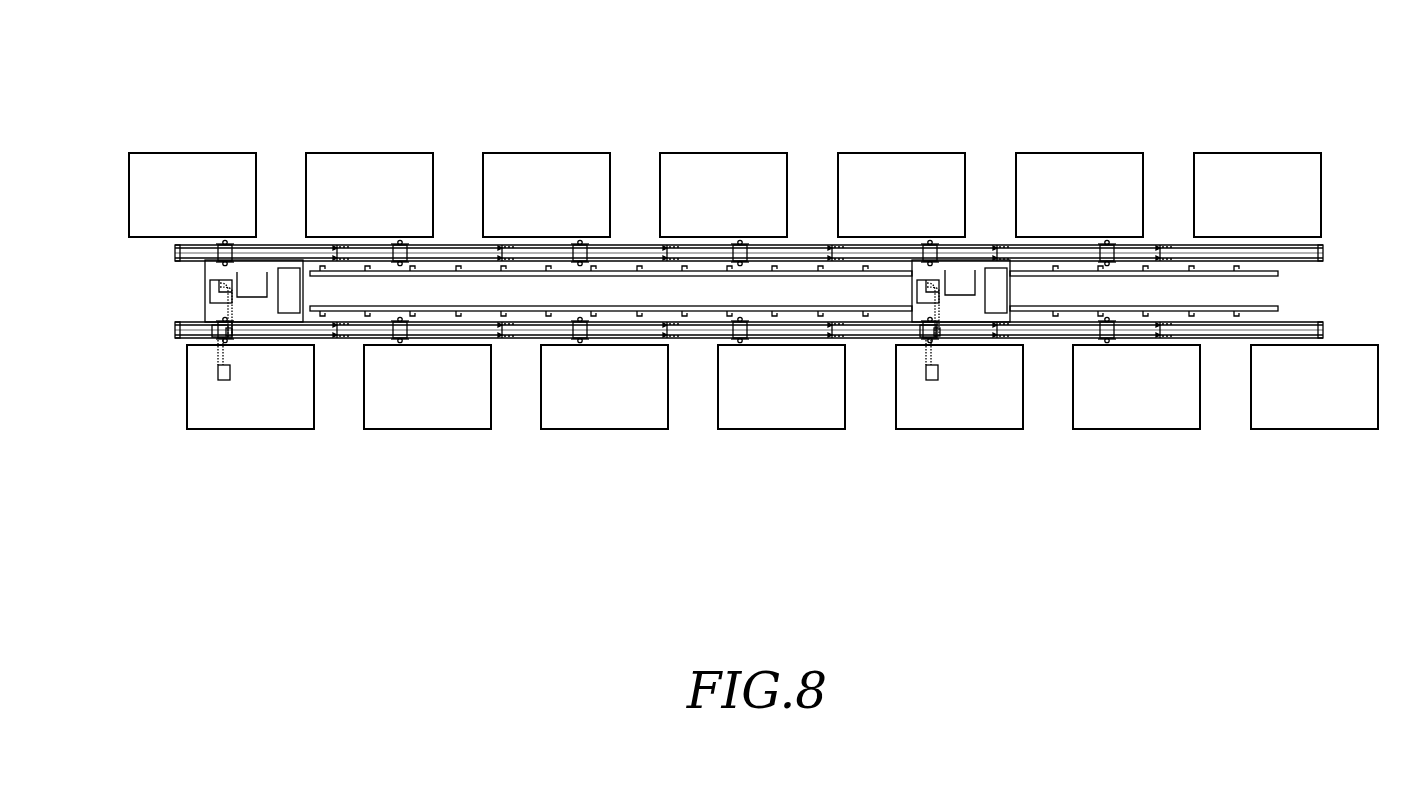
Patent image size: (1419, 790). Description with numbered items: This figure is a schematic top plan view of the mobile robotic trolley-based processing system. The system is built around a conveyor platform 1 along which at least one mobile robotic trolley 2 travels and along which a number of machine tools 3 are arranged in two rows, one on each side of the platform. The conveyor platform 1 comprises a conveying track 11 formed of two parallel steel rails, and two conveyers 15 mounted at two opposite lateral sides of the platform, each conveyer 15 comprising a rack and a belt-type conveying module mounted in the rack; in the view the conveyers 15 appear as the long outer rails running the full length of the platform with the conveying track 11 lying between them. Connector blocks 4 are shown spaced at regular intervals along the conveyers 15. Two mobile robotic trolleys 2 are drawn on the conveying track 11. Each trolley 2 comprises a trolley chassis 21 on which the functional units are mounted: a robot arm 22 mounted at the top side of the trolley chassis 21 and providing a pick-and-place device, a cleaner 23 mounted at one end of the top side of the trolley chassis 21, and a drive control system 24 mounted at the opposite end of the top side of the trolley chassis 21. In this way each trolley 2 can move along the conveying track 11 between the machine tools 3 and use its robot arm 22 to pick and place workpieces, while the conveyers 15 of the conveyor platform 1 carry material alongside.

The conveyor platform 1 is at (703, 295).
The mobile robotic trolley 2 is at (208, 370).
The machine tool 3 is at (379, 137).
The rail connector block 4 is at (225, 247).
The conveying track 11 is at (794, 321).
The conveyer 15 is at (190, 248).
The trolley chassis 21 is at (215, 271).
The robot arm 22 is at (220, 370).
The cleaner 23 is at (252, 288).
The drive control system 24 is at (292, 302).